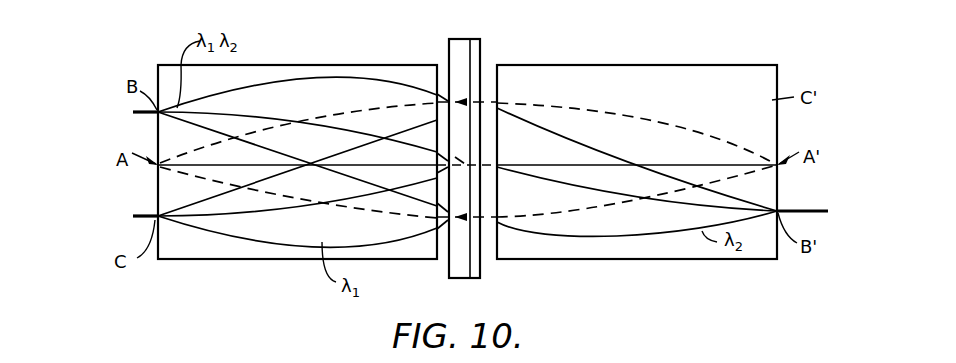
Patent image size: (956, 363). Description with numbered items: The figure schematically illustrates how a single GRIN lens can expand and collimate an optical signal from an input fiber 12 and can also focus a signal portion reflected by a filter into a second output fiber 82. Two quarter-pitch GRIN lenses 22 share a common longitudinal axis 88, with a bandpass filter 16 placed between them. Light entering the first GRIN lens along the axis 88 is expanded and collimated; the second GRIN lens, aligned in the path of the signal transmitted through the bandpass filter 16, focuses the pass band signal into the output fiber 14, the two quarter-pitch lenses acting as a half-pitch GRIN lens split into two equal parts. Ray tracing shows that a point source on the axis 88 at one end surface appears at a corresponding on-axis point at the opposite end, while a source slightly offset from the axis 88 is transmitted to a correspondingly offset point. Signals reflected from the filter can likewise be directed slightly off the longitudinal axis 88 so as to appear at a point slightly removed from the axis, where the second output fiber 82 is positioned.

The input fiber 12 is at (134, 118).
The output fiber 14 is at (816, 214).
The bandpass filter 16 is at (466, 38).
The GRIN lens 22 is at (262, 257).
The second output fiber 82 is at (134, 221).
The longitudinal axis 88 is at (248, 163).